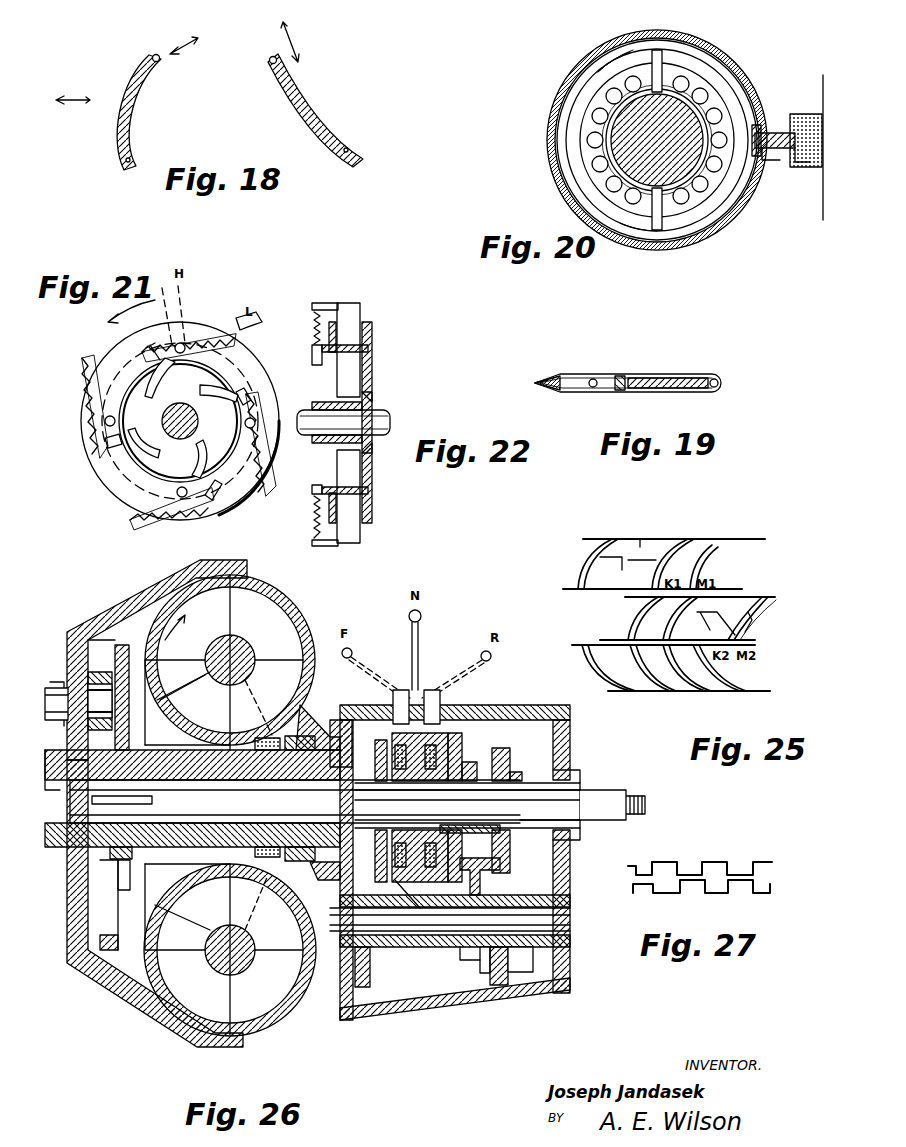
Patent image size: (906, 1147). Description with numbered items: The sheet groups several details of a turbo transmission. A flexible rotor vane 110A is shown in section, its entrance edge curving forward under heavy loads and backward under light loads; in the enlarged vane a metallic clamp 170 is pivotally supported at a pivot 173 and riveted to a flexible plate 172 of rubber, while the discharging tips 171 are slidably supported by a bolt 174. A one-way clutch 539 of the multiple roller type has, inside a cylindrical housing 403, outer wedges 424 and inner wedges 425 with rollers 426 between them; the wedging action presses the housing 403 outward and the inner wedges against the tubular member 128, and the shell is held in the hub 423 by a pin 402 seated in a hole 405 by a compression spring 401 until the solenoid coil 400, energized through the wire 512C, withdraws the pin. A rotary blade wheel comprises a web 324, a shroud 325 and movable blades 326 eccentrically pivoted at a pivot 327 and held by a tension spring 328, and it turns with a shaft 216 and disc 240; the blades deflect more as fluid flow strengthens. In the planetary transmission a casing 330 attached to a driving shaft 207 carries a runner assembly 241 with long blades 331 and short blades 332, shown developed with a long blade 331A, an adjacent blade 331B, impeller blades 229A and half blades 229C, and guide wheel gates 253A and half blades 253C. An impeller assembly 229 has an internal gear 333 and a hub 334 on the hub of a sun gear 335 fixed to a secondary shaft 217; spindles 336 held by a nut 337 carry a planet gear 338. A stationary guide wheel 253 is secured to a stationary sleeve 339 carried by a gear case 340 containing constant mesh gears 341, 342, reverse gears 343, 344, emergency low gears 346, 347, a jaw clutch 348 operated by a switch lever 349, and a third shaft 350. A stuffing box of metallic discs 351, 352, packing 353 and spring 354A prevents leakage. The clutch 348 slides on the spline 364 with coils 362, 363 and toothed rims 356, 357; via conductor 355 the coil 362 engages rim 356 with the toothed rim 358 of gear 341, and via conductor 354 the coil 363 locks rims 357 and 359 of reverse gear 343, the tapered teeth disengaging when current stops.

In FIG. 18, the flexible rotor vane 110A is at (122, 98).
In FIG. 18, the pivot 173 is at (269, 52).
In FIG. 19, the pivot 173 is at (722, 382).
In FIG. 18, the bolt 174 is at (340, 146).
In FIG. 19, the bolt 174 is at (590, 392).
In FIG. 20, the one-way clutch 539 is at (598, 66).
In FIG. 20, the outer wedges 424 is at (708, 82).
In FIG. 20, the hub 423 is at (732, 200).
In FIG. 20, the rollers 426 is at (556, 118).
In FIG. 20, the inner wedges 425 is at (572, 132).
In FIG. 20, the hole 405 is at (742, 140).
In FIG. 20, the tubular member 128 is at (680, 123).
In FIG. 20, the cylindrical housing 403 is at (742, 116).
In FIG. 20, the solenoid coil 400 is at (800, 116).
In FIG. 20, the wire 512C is at (823, 86).
In FIG. 20, the compression spring 401 is at (800, 166).
In FIG. 20, the pin 402 is at (766, 168).
In FIG. 21, the shaft 216 is at (198, 421).
In FIG. 22, the shaft 216 is at (390, 423).
In FIG. 21, the movable blades 326 is at (82, 360).
In FIG. 22, the movable blades 326 is at (362, 533).
In FIG. 21, the tension spring 328 is at (104, 421).
In FIG. 22, the tension spring 328 is at (312, 308).
In FIG. 21, the pivot 327 is at (176, 493).
In FIG. 22, the pivot 327 is at (372, 490).
In FIG. 22, the disc 240 is at (372, 378).
In FIG. 22, the web 324 is at (372, 325).
In FIG. 22, the shroud 325 is at (330, 480).
In FIG. 19, the metallic clamp 170 is at (714, 394).
In FIG. 19, the discharging tips 171 is at (553, 372).
In FIG. 19, the flexible plate 172 is at (658, 376).
In FIG. 25, the impeller blades 229A is at (642, 540).
In FIG. 26, the impeller blades 229A is at (198, 583).
In FIG. 25, the impeller half blades 229C is at (600, 557).
In FIG. 25, the long blades 331 is at (770, 596).
In FIG. 26, the long blades 331 is at (288, 950).
In FIG. 25, the long blade 331A is at (634, 622).
In FIG. 25, the adjacent blade 331B is at (764, 622).
In FIG. 25, the short blades 332 is at (696, 618).
In FIG. 26, the short blades 332 is at (236, 892).
In FIG. 25, the gates 253A is at (596, 678).
In FIG. 26, the gates 253A is at (176, 936).
In FIG. 25, the guide wheel half blades 253C is at (640, 692).
In FIG. 27, the toothed rim 358 is at (740, 866).
In FIG. 26, the toothed rim 358 is at (450, 919).
In FIG. 27, the toothed rim 356 is at (716, 892).
In FIG. 26, the toothed rim 356 is at (393, 700).
In FIG. 26, the casing 330 is at (112, 985).
In FIG. 26, the driving shaft 207 is at (110, 766).
In FIG. 26, the stationary sleeve 339 is at (246, 838).
In FIG. 26, the planet gear 338 is at (120, 650).
In FIG. 26, the spindles 336 is at (103, 701).
In FIG. 26, the nut 337 is at (58, 688).
In FIG. 26, the impeller assembly 229 is at (240, 576).
In FIG. 26, the runner assembly 241 is at (288, 672).
In FIG. 26, the stationary guide wheel 253 is at (170, 728).
In FIG. 26, the spring 354A is at (280, 760).
In FIG. 26, the constant mesh gear 341 is at (324, 749).
In FIG. 26, the secondary shaft 217 is at (152, 800).
In FIG. 26, the metallic disc 352 is at (272, 842).
In FIG. 26, the metallic disc 351 is at (313, 844).
In FIG. 26, the packing 353 is at (311, 874).
In FIG. 26, the hub 334 is at (128, 853).
In FIG. 26, the sun gear 335 is at (111, 905).
In FIG. 26, the internal gear 333 is at (118, 922).
In FIG. 26, the gear case 340 is at (520, 998).
In FIG. 26, the switch lever 349 is at (421, 618).
In FIG. 26, the conductor 355 is at (410, 690).
In FIG. 26, the conductor 354 is at (422, 690).
In FIG. 26, the toothed rim 357 is at (440, 704).
In FIG. 26, the jaw clutch 348 is at (467, 805).
In FIG. 26, the spline 364 is at (420, 807).
In FIG. 26, the coil 363 is at (470, 833).
In FIG. 26, the reverse gear 343 is at (462, 760).
In FIG. 26, the emergency low gear 346 is at (510, 758).
In FIG. 26, the toothed rim 359 is at (452, 868).
In FIG. 26, the third shaft 350 is at (596, 790).
In FIG. 26, the coil 362 is at (431, 903).
In FIG. 26, the constant mesh gear 342 is at (370, 980).
In FIG. 26, the reverse gear 344 is at (484, 972).
In FIG. 26, the emergency low gear 347 is at (506, 964).